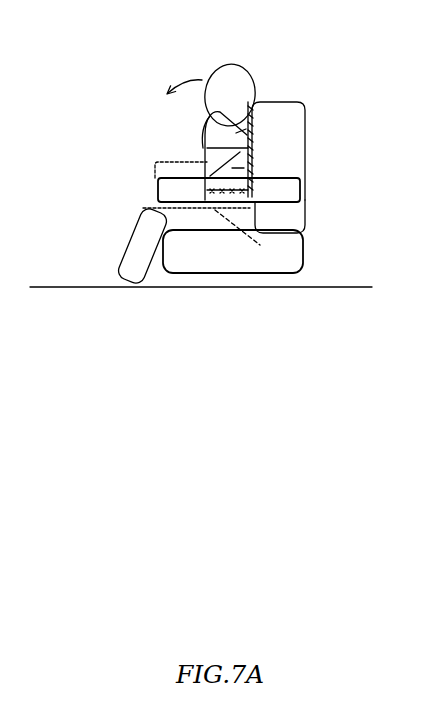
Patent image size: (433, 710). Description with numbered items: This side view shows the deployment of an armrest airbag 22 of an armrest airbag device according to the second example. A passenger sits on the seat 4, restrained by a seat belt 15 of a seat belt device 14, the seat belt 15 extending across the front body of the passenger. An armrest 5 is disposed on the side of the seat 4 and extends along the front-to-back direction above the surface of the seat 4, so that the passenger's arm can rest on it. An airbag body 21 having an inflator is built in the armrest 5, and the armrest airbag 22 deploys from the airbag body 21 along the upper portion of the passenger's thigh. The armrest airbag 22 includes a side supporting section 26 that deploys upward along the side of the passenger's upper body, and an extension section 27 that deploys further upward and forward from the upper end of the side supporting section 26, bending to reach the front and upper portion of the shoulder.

The seat 4 is at (302, 247).
The armrest 5 is at (285, 210).
The seat belt device 14 is at (182, 199).
The seat belt 15 is at (245, 73).
The airbag body 21 is at (233, 170).
The armrest airbag 22 is at (349, 95).
The side supporting section 26 is at (250, 165).
The extension section 27 is at (236, 133).